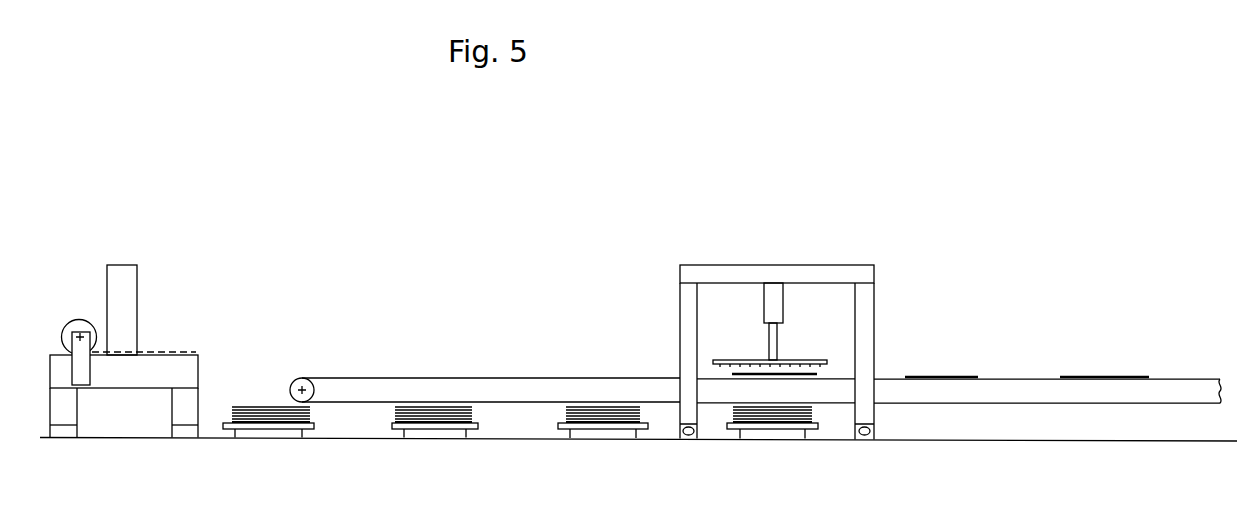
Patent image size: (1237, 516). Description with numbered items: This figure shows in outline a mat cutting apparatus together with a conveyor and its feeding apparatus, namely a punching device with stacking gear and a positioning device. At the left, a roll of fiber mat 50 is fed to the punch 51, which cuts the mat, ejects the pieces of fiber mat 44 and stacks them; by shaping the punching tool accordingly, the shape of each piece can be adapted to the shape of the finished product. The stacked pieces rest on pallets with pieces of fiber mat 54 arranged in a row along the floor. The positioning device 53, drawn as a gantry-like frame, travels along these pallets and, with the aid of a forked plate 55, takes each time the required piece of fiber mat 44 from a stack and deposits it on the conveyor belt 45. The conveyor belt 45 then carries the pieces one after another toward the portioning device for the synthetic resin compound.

The pieces of fiber mat 44 is at (251, 405).
The conveyor belt 45 is at (838, 378).
The roll of fiber mat 50 is at (73, 323).
The punch 51 is at (119, 270).
The positioning device 53 is at (728, 270).
The pallets with pieces of fiber mat 54 is at (408, 429).
The forked plate 55 is at (807, 358).